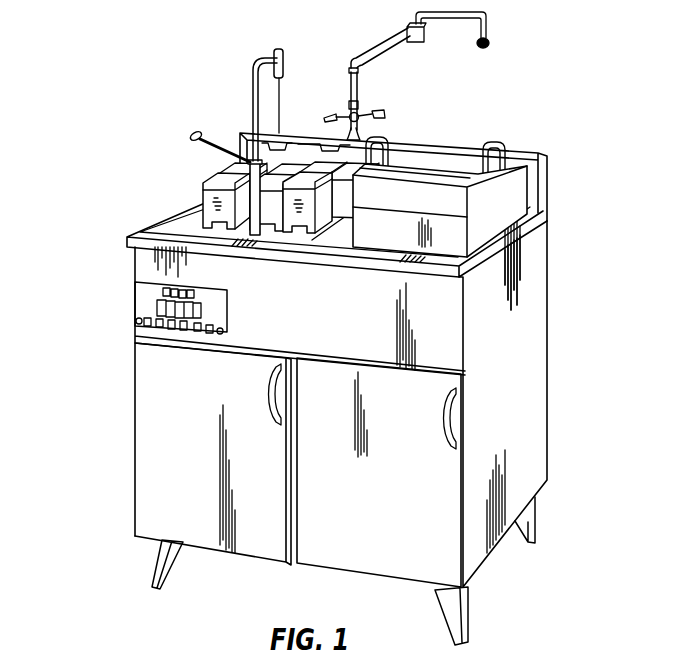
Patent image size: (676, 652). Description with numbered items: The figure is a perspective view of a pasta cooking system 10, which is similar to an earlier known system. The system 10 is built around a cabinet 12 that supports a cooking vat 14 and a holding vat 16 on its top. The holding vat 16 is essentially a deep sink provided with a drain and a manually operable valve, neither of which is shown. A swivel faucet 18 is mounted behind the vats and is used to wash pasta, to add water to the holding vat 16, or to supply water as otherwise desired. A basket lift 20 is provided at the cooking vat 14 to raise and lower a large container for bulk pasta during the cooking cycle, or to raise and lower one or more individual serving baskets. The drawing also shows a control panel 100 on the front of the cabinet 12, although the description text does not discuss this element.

The pasta cooking system 10 is at (110, 162).
The cabinet 12 is at (523, 407).
The cooking vat 14 is at (189, 220).
The holding vat 16 is at (340, 236).
The swivel faucet 18 is at (381, 48).
The basket lift 20 is at (260, 56).
The control panel 100 is at (143, 294).